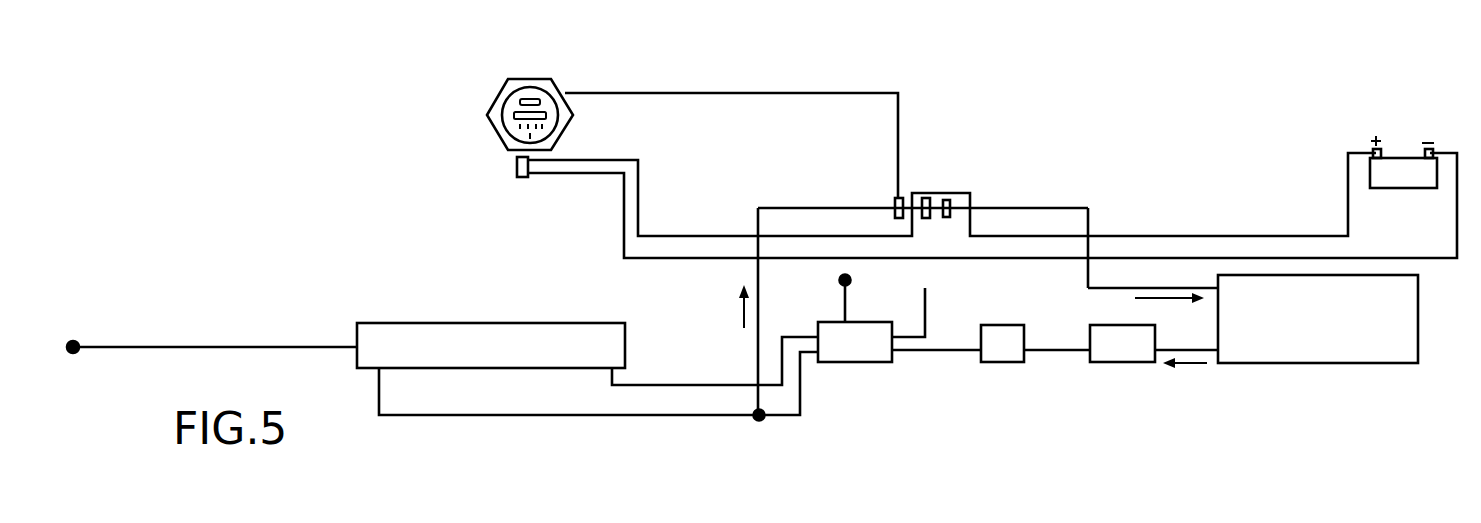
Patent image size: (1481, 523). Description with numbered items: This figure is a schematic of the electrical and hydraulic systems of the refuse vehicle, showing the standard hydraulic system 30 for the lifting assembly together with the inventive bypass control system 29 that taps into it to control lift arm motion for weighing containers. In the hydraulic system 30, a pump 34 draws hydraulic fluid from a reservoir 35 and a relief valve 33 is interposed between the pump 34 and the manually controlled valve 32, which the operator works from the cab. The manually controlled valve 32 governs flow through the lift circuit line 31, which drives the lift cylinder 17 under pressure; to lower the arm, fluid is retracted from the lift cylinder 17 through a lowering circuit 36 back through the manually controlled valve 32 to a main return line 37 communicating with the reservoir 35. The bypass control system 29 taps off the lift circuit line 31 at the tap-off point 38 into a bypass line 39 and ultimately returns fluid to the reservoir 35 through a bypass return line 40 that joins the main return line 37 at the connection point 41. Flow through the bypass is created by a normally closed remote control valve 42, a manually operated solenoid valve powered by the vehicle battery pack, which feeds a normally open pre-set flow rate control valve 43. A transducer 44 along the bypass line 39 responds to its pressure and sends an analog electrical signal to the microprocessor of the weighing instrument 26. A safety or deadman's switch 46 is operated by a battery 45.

The lift cylinder 17 is at (480, 322).
The weighing instrument 26 is at (537, 79).
The bypass control system 29 is at (949, 126).
The hydraulic system 30 is at (1034, 425).
The lift circuit line 31 is at (415, 418).
The manually controlled valve 32 is at (852, 363).
The relief valve 33 is at (987, 363).
The pump 34 is at (1105, 363).
The reservoir 35 is at (1305, 364).
The lowering circuit 36 is at (710, 383).
The main return line 37 is at (997, 288).
The tap-off point 38 is at (763, 419).
The bypass line 39 is at (798, 208).
The bypass return line 40 is at (1090, 219).
The connection point 41 is at (1090, 288).
The remote control valve 42 is at (926, 198).
The pre-set flow rate control valve 43 is at (950, 203).
The transducer 44 is at (900, 198).
The battery 45 is at (1428, 190).
The safety switch 46 is at (517, 167).